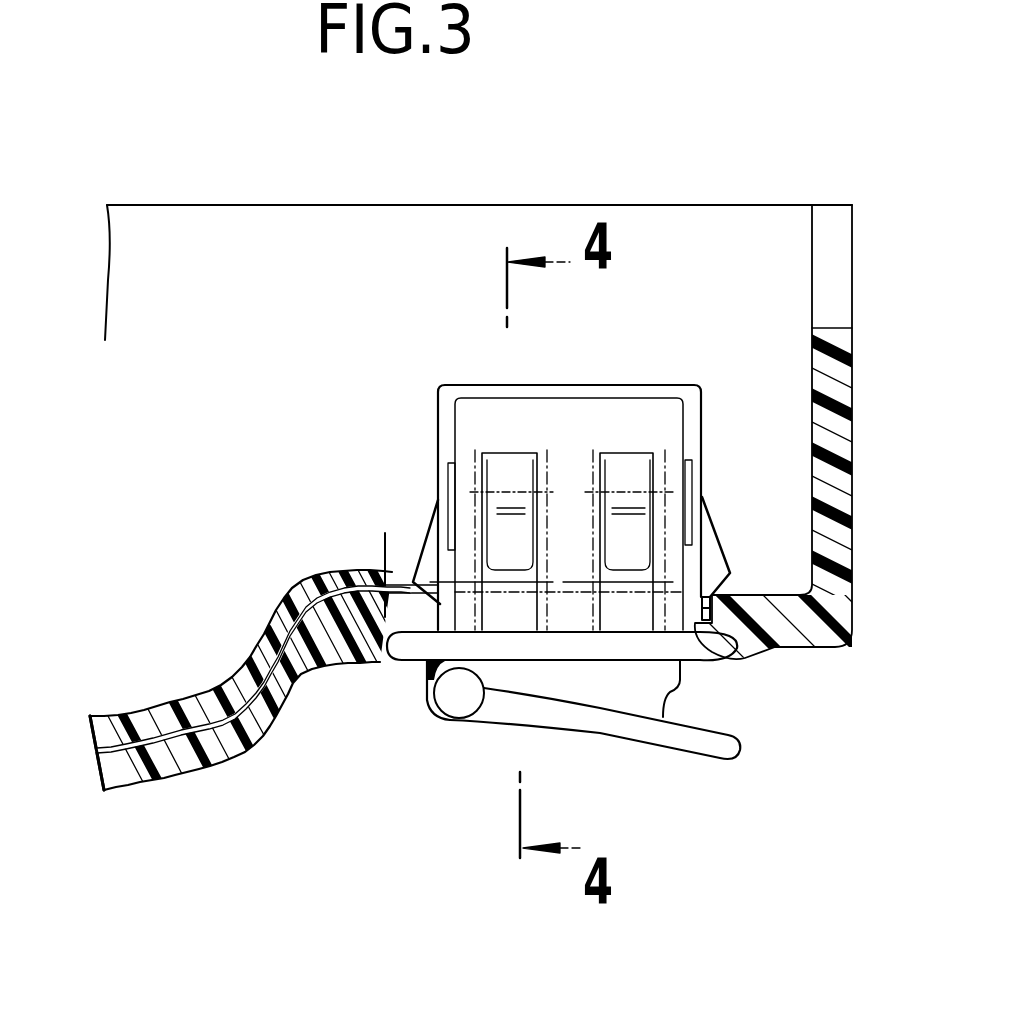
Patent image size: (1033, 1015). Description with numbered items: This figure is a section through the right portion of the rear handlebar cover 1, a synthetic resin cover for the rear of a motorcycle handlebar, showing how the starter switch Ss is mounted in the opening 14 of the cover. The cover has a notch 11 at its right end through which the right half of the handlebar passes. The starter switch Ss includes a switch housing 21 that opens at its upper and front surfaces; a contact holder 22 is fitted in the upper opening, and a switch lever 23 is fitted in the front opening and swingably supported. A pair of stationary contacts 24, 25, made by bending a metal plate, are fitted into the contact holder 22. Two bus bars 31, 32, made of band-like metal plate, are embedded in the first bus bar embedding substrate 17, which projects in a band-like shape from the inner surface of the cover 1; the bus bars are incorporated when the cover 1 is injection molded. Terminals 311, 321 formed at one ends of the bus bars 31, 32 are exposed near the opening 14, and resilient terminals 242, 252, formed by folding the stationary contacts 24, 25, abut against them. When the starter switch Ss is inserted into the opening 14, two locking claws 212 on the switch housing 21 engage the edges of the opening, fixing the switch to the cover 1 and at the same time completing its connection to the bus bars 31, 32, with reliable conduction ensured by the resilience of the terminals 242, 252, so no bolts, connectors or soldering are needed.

The rear handlebar cover 1 is at (188, 770).
The notch 11 is at (836, 326).
The opening 14 is at (713, 655).
The first bus bar embedding substrate 17 is at (108, 727).
The switch housing 21 is at (680, 386).
The locking claw 212 is at (745, 517).
The contact holder 22 is at (577, 385).
The switch lever 23 is at (635, 737).
The stationary contact 24 is at (495, 633).
The terminal 242 is at (504, 462).
The stationary contact 25 is at (628, 632).
The terminal 252 is at (631, 462).
The bus bar 31 is at (204, 696).
The bus bar 32 is at (253, 669).
The terminal 311 is at (437, 500).
The terminal 321 is at (673, 498).
The starter switch Ss is at (575, 742).